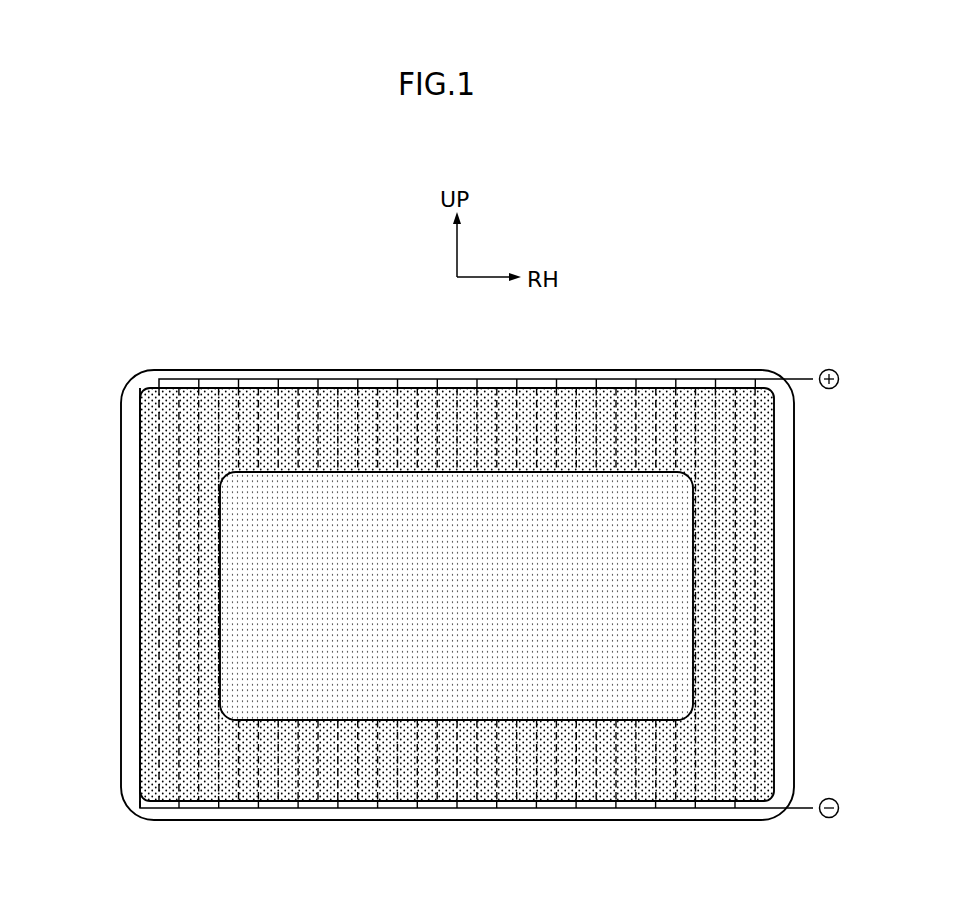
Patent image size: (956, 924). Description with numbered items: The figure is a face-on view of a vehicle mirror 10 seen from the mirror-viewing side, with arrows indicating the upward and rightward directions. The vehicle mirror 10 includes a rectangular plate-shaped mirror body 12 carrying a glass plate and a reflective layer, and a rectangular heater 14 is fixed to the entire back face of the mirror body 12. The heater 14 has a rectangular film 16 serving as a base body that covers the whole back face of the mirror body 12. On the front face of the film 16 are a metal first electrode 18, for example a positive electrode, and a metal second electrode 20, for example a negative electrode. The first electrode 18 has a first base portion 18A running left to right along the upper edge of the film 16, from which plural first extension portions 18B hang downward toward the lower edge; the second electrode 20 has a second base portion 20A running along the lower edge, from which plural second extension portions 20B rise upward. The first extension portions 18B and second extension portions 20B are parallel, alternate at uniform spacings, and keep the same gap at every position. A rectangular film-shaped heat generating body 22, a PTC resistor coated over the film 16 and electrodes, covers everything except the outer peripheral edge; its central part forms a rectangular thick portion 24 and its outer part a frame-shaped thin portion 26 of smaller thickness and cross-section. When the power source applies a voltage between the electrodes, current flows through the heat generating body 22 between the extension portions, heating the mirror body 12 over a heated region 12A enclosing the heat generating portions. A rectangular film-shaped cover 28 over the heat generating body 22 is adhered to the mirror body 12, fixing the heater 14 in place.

The vehicle mirror 10 is at (190, 262).
The mirror body 12 is at (152, 371).
The heated region 12A is at (690, 388).
The heater 14 is at (758, 364).
The film 16 is at (127, 462).
The first electrode 18 is at (266, 378).
The first base portion 18A is at (382, 379).
The first extension portions 18B is at (597, 380).
The second electrode 20 is at (262, 808).
The second base portion 20A is at (360, 808).
The second extension portions 20B is at (538, 808).
The heat generating body 22 is at (134, 681).
The thick portion 24 is at (695, 527).
The thin portion 26 is at (775, 658).
The cover 28 is at (784, 478).